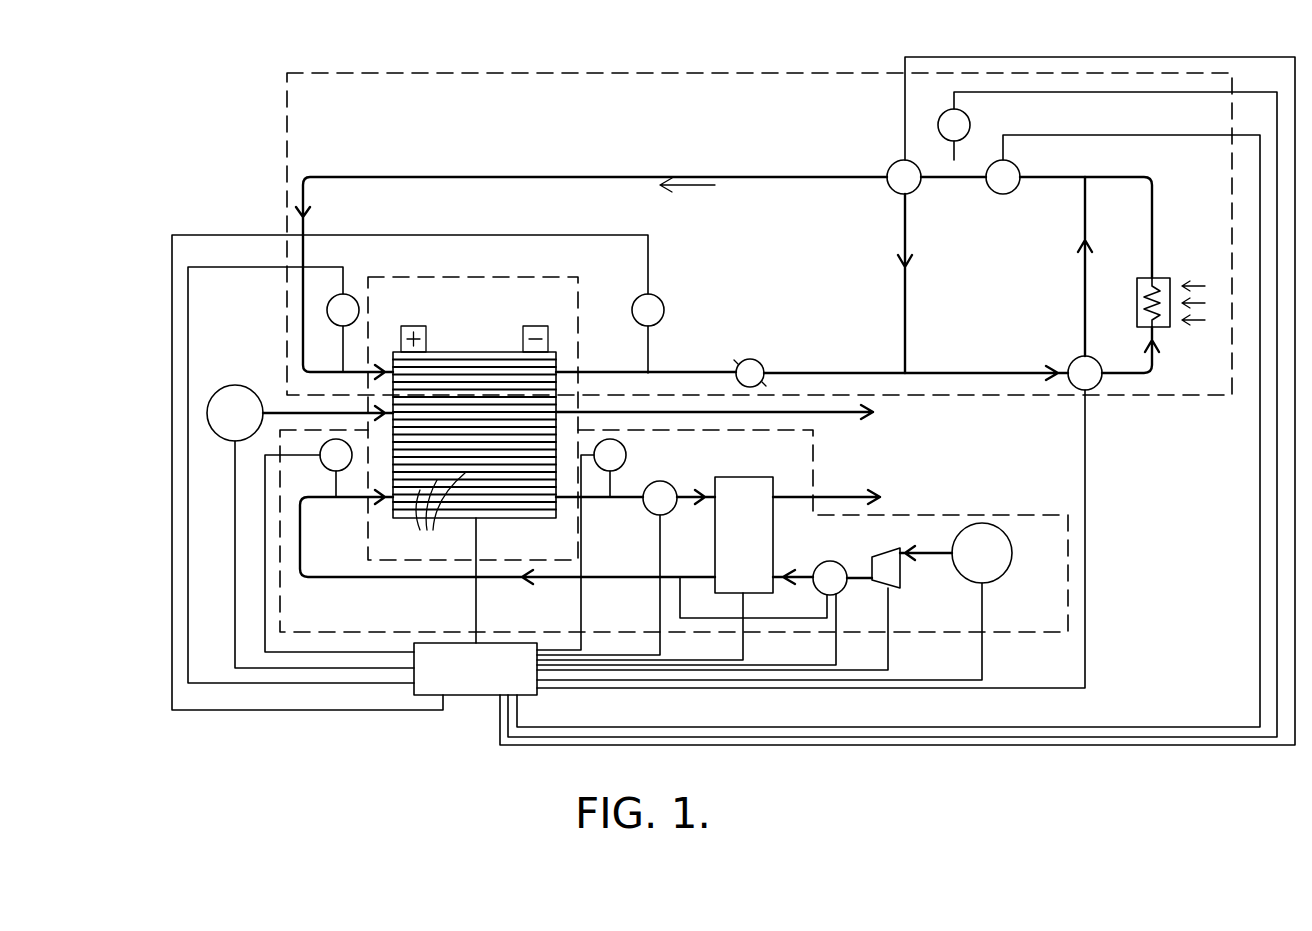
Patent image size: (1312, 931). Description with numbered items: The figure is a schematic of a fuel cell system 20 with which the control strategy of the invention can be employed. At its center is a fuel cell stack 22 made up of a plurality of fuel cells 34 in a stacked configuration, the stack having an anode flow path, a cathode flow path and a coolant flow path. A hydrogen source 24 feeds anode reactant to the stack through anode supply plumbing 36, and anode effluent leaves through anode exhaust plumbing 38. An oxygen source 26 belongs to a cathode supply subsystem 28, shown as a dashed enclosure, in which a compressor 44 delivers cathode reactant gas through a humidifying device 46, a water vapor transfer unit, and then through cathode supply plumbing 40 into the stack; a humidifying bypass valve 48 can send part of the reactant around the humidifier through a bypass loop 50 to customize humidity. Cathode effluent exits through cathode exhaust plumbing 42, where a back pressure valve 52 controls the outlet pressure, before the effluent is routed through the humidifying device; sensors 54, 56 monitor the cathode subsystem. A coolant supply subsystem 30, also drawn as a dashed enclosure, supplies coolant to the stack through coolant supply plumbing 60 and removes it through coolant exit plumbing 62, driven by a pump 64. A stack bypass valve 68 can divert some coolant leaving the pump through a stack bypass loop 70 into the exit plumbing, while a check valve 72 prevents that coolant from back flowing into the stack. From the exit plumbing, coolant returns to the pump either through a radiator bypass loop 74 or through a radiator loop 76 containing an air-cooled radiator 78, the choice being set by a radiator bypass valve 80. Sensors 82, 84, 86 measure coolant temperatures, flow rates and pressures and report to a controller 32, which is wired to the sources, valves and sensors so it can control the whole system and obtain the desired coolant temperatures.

The fuel cell system 20 is at (250, 160).
The fuel cell stack 22 is at (455, 352).
The hydrogen source 24 is at (230, 445).
The oxygen source 26 is at (992, 580).
The cathode supply subsystem 28 is at (1068, 580).
The coolant supply subsystem 30 is at (810, 73).
The controller 32 is at (473, 695).
The fuel cells 34 is at (435, 514).
The anode supply plumbing 36 is at (280, 395).
The anode exhaust plumbing 38 is at (855, 418).
The cathode supply plumbing 40 is at (400, 590).
The cathode exhaust plumbing 42 is at (700, 490).
The compressor 44 is at (903, 580).
The humidifying device 46 is at (744, 535).
The humidifying bypass valve 48 is at (842, 592).
The bypass loop 50 is at (780, 620).
The back pressure valve 52 is at (652, 515).
The sensor 54 is at (348, 480).
The sensor 56 is at (626, 452).
The coolant supply plumbing 60 is at (413, 177).
The coolant exit plumbing 62 is at (822, 372).
The pump 64 is at (1003, 194).
The stack bypass valve 68 is at (890, 165).
The stack bypass loop 70 is at (905, 340).
The check valve 72 is at (757, 360).
The radiator bypass loop 74 is at (1080, 325).
The radiator loop 76 is at (1152, 232).
The air-cooled radiator 78 is at (1172, 327).
The radiator bypass valve 80 is at (1095, 388).
The sensor 82 is at (970, 120).
The sensor 84 is at (348, 296).
The sensor 86 is at (662, 305).